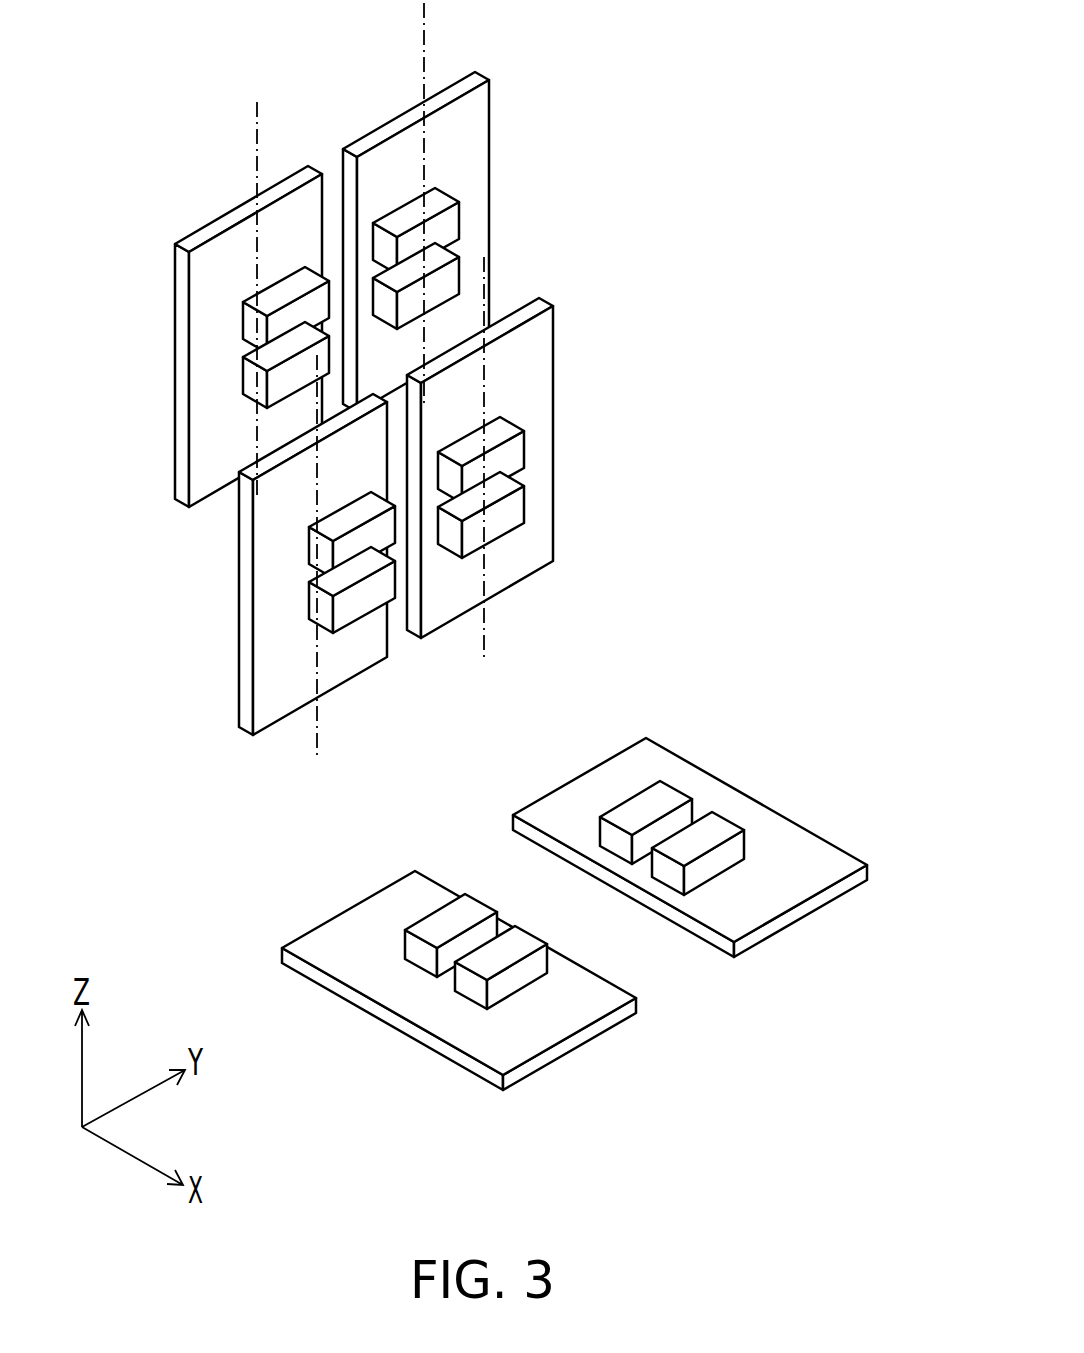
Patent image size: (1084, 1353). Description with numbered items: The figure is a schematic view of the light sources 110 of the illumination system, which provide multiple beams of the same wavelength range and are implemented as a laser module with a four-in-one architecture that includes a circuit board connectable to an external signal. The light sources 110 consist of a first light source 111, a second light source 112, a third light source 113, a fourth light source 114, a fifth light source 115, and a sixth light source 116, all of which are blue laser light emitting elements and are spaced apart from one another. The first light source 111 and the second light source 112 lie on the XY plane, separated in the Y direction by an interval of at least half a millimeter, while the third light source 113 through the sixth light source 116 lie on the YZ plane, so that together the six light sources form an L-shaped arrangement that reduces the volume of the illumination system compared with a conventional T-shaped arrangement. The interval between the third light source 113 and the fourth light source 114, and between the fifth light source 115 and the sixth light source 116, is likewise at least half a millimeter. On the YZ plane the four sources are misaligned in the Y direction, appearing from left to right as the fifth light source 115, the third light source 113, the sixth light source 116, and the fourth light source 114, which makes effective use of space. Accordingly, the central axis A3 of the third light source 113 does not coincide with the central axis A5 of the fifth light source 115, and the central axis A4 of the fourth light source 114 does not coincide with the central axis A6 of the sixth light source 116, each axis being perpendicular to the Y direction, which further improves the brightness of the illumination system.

The light sources 110 is at (502, 614).
The first light source 111 is at (395, 1003).
The second light source 112 is at (775, 902).
The third light source 113 is at (272, 598).
The fourth light source 114 is at (543, 453).
The fifth light source 115 is at (202, 343).
The sixth light source 116 is at (478, 190).
The central axis of the third light source A3 is at (317, 732).
The central axis of the fourth light source A4 is at (484, 636).
The central axis of the fifth light source A5 is at (257, 128).
The central axis of the sixth light source A6 is at (424, 32).